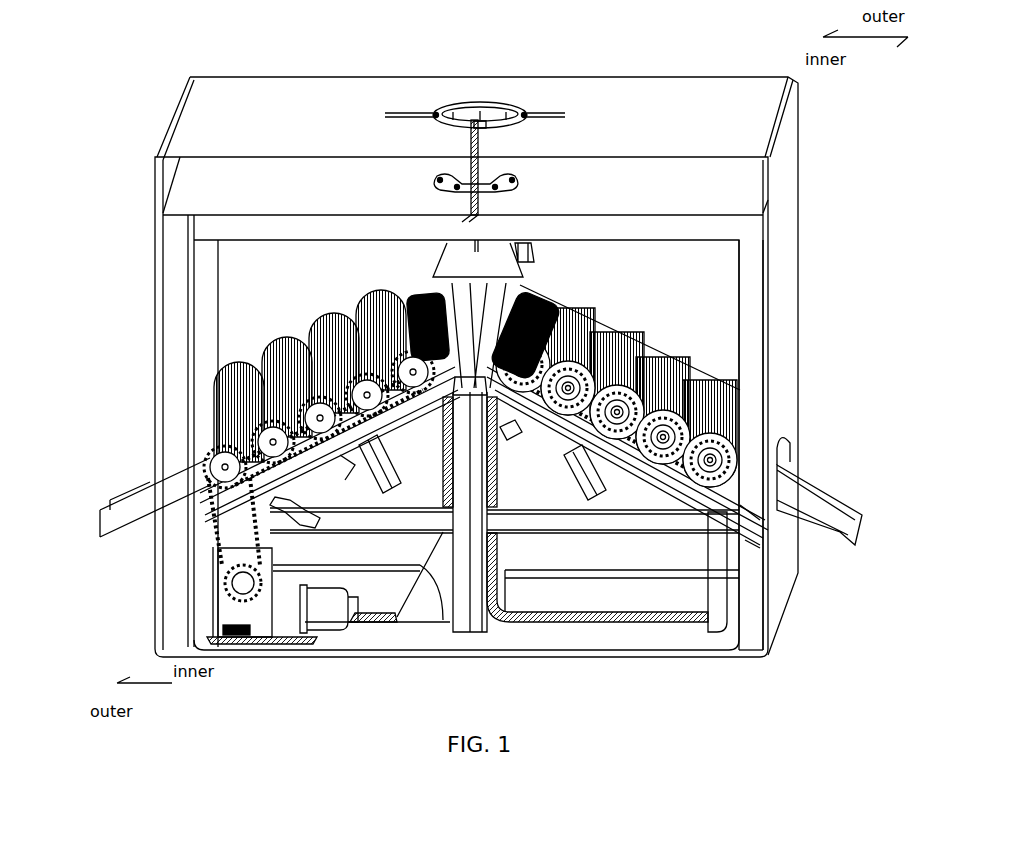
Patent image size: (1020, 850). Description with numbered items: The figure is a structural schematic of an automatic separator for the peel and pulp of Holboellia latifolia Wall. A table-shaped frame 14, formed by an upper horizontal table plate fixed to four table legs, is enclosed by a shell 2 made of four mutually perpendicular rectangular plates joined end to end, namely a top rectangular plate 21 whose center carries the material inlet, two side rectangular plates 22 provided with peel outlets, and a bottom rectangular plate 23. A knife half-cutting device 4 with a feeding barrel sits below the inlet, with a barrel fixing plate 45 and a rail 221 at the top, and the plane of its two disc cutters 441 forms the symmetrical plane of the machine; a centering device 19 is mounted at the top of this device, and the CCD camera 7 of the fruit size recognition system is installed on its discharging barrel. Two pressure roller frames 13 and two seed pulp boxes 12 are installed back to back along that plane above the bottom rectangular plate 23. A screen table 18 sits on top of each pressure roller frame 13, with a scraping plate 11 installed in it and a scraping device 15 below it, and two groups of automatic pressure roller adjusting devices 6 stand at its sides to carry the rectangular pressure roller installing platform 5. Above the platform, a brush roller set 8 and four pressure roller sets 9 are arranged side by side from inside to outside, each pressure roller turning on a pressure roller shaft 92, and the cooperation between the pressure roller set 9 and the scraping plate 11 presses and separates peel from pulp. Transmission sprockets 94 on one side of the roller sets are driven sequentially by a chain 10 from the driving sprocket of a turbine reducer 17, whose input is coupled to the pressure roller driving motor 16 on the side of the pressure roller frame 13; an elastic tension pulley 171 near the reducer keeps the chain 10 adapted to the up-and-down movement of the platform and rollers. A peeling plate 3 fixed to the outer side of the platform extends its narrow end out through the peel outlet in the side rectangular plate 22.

The shell 2 is at (345, 187).
The top rectangular plate 21 is at (205, 135).
The table-shaped frame 14 is at (315, 112).
The side rectangular plate 22 is at (787, 160).
The top mounting rail 221 is at (387, 113).
The centering device 19 is at (463, 110).
The knife half-cutting device 4 is at (490, 167).
The disc cutter 441 is at (452, 165).
The barrel fixing plate 45 is at (512, 173).
The CCD camera 7 is at (530, 247).
The brush roller set 8 is at (573, 282).
The pressure roller set 9 is at (217, 407).
The chain 10 is at (228, 517).
The scraping plate 11 is at (742, 420).
The pressure roller shaft 92 is at (765, 352).
The pressure roller frame 13 is at (785, 453).
The peeling plate 3 is at (825, 512).
The pressure roller installing platform 5 is at (705, 472).
The automatic pressure roller adjusting device 6 is at (680, 527).
The seed pulp box 12 is at (680, 597).
The scraping device 15 is at (585, 492).
The screen table 18 is at (503, 432).
The bottom rectangular plate 23 is at (510, 640).
The transmission sprocket 94 is at (385, 405).
The pressure roller driving motor 16 is at (322, 612).
The turbine reducer 17 is at (232, 613).
The elastic tension pulley 171 is at (232, 555).